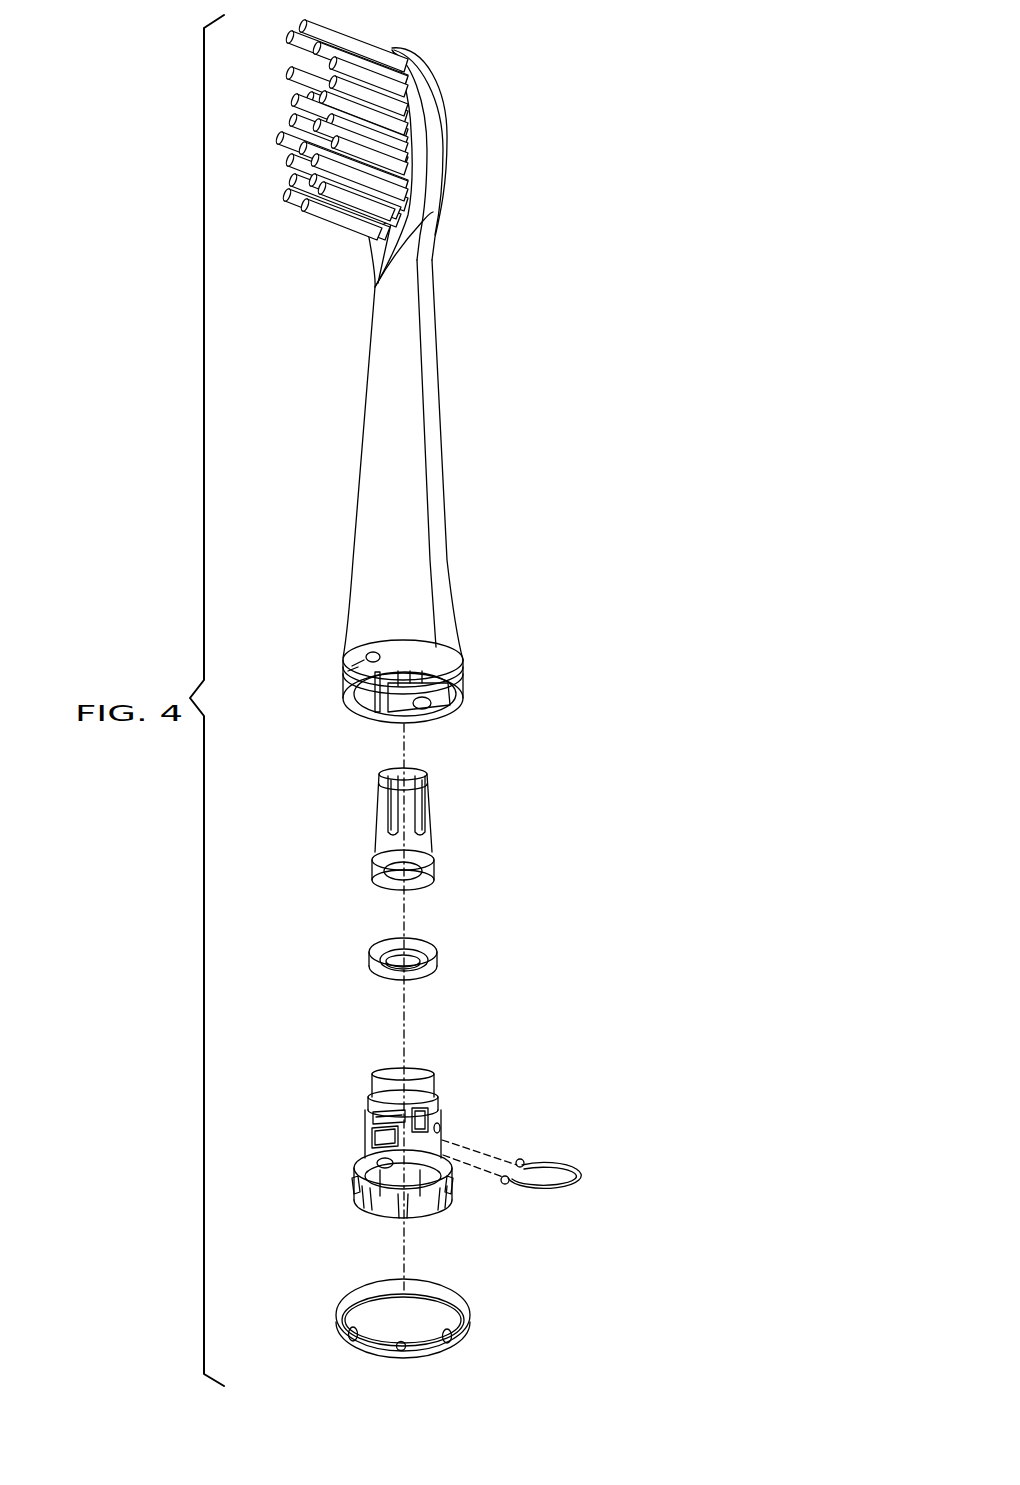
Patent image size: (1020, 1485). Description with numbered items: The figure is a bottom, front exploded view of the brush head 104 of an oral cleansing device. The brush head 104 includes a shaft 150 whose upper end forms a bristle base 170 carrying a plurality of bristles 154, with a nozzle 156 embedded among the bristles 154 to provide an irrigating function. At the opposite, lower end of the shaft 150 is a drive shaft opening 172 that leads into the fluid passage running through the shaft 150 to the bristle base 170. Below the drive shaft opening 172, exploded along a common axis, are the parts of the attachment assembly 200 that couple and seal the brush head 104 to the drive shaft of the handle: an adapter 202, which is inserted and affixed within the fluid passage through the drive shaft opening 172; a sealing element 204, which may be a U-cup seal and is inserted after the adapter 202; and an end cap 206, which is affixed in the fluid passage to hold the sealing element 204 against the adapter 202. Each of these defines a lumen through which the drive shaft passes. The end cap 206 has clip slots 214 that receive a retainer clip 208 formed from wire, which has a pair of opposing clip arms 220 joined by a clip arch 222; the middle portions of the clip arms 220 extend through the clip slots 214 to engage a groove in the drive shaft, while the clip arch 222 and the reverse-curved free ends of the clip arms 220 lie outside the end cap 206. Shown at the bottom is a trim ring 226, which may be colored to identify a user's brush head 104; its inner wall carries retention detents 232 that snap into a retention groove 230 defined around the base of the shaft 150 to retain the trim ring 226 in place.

The brush head 104 is at (562, 453).
The shaft 150 is at (430, 375).
The bristles 154 is at (330, 215).
The nozzle 156 is at (336, 80).
The bristle base 170 is at (441, 144).
The drive shaft opening 172 is at (381, 706).
The attachment assembly 200 is at (545, 1024).
The adapter 202 is at (368, 846).
The sealing element 204 is at (437, 960).
The end cap 206 is at (385, 1080).
The retainer clip 208 is at (569, 1171).
The clip slots 214 is at (372, 1122).
The clip arms 220 is at (538, 1162).
The clip arch 222 is at (573, 1189).
The trim ring 226 is at (347, 1300).
The retention groove 230 is at (462, 688).
The retention detents 232 is at (404, 1350).